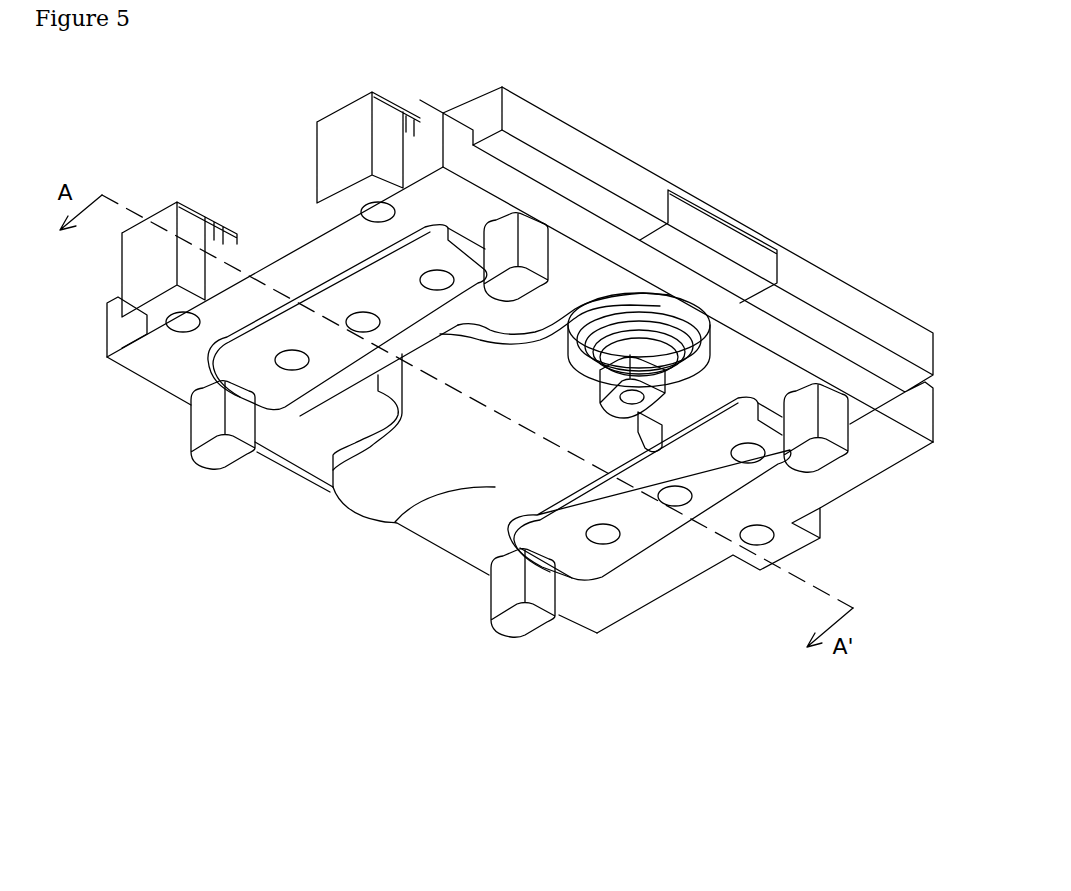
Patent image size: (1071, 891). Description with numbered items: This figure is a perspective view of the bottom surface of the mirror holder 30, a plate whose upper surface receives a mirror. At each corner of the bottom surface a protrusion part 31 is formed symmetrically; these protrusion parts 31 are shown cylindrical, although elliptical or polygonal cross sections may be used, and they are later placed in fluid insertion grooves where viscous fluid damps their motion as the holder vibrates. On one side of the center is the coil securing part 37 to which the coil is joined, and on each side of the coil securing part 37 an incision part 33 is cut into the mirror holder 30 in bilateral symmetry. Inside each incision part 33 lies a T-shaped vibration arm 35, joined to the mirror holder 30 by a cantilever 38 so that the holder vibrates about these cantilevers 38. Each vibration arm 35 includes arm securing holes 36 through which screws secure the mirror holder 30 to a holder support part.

The mirror holder 30 is at (808, 170).
The protrusion part 31 is at (535, 233).
The incision part 33 is at (322, 392).
The vibration arm 35 is at (582, 553).
The arm securing hole 36 is at (437, 280).
The coil securing part 37 is at (635, 397).
The cantilever 38 is at (628, 470).